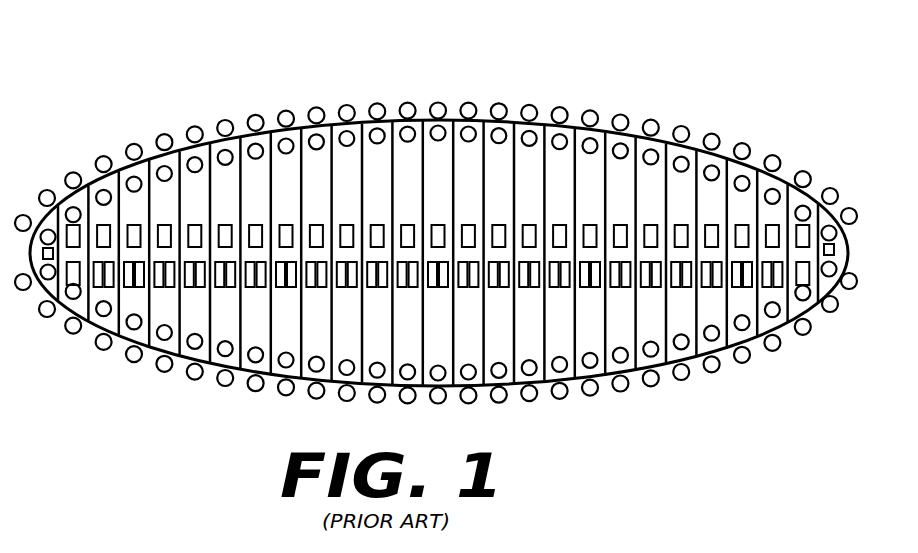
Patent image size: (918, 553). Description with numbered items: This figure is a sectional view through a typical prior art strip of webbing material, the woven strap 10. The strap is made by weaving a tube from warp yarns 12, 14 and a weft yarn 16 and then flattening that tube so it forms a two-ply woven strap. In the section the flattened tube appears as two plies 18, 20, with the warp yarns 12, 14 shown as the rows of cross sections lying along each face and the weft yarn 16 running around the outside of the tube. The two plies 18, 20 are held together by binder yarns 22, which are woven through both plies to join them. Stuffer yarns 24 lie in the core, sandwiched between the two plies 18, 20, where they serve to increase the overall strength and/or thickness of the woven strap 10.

The woven strap 10 is at (577, 54).
The warp yarns 12 is at (75, 172).
The warp yarns 14 is at (196, 165).
The weft yarn 16 is at (280, 378).
The ply 18 is at (823, 132).
The ply 20 is at (815, 357).
The binder yarns 22 is at (334, 180).
The stuffer yarns 24 is at (405, 228).